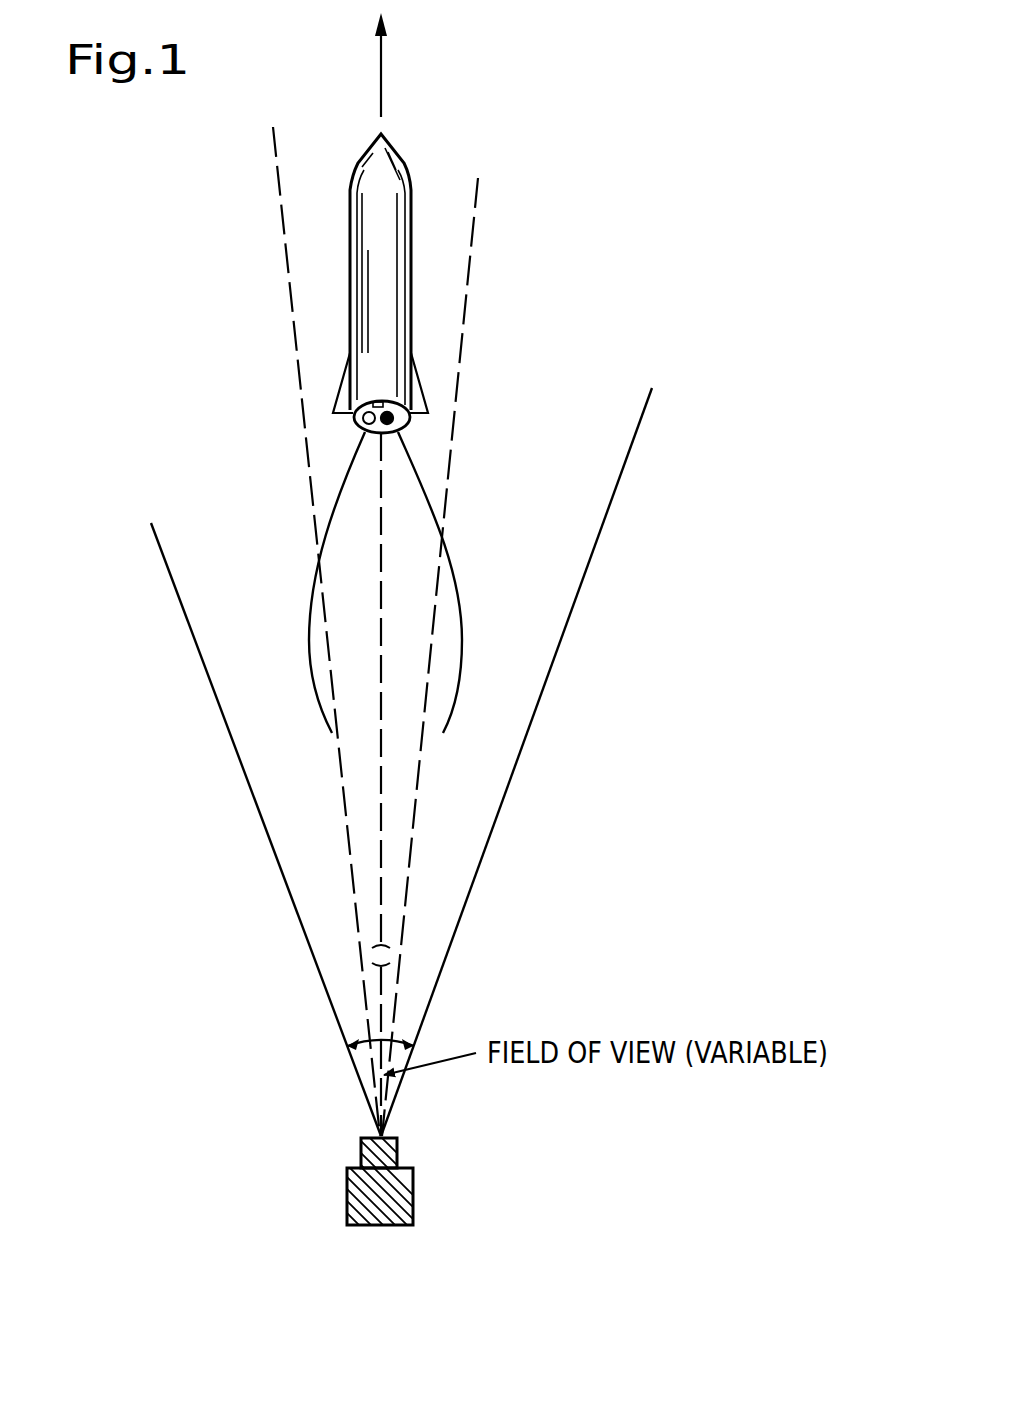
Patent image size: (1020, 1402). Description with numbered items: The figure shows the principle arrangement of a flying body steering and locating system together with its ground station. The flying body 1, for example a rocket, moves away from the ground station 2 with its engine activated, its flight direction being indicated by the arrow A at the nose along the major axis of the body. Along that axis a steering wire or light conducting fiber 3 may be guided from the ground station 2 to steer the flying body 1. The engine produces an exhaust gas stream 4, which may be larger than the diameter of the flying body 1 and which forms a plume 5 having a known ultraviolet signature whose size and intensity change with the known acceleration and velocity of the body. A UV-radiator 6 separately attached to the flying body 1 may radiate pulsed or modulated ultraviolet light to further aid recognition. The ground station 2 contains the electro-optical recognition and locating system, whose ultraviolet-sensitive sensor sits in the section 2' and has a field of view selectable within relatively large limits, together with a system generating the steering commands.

The flying body 1 is at (378, 248).
The ground station 2 is at (464, 1195).
The section of the ground station 2' is at (382, 1151).
The light conducting fiber 3 is at (381, 811).
The exhaust gas stream 4 is at (356, 497).
The UV-plume 5 is at (462, 596).
The UV-radiator 6 is at (390, 416).
The arrow A is at (381, 90).